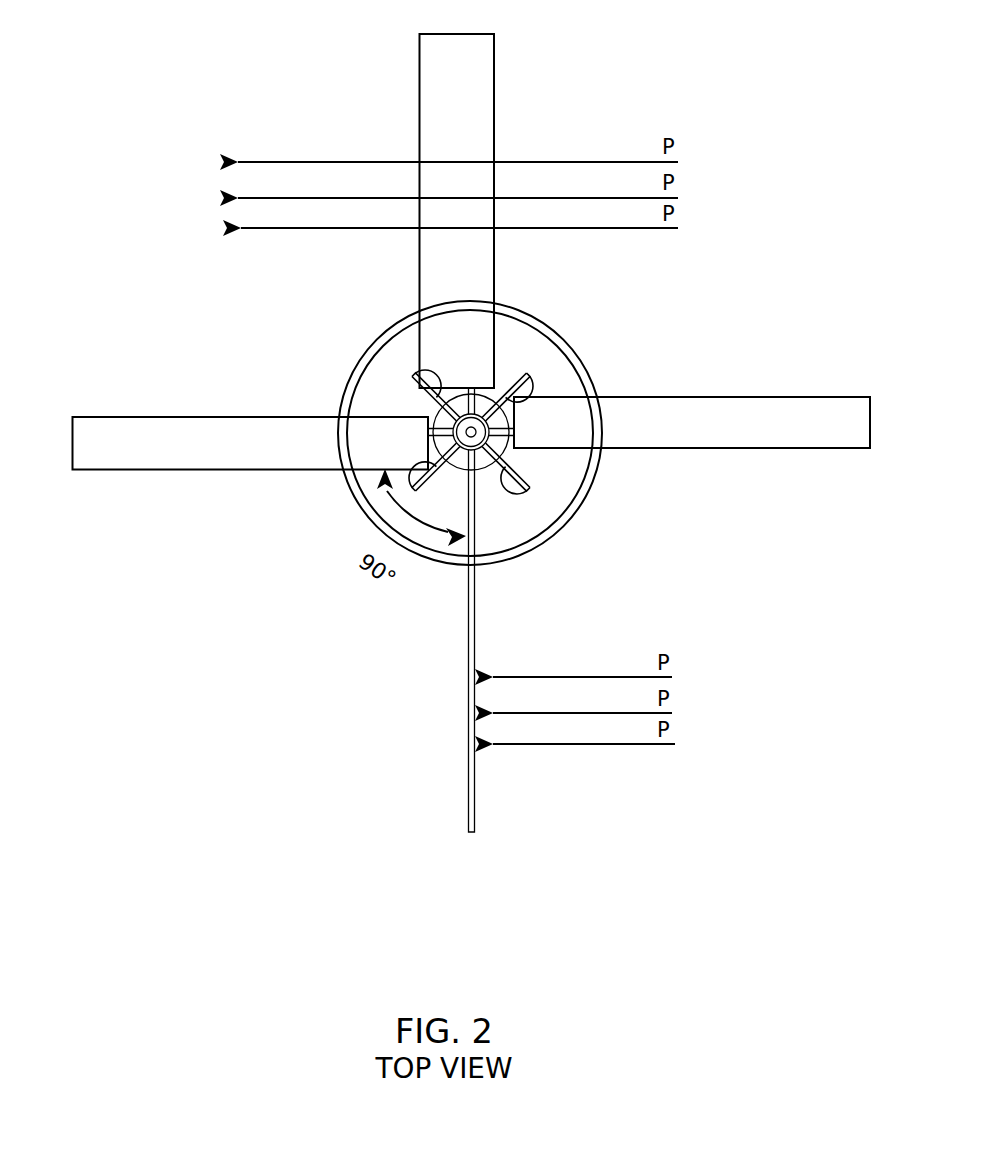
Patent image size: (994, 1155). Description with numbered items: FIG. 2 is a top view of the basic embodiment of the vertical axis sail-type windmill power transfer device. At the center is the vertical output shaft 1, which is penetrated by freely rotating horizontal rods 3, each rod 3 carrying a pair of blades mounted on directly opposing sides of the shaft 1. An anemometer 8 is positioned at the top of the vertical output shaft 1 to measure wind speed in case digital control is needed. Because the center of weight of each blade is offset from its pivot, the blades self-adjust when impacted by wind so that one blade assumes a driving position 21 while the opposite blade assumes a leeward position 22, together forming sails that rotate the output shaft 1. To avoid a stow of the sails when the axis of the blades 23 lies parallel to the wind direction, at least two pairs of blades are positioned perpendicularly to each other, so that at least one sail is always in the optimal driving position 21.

The vertical output shaft 1 is at (488, 425).
The horizontal rod 3 is at (474, 472).
The anemometer 8 is at (530, 388).
The blade in driving position 21 is at (468, 798).
The blade in leeward position 22 is at (482, 79).
The blade 23 is at (85, 445).